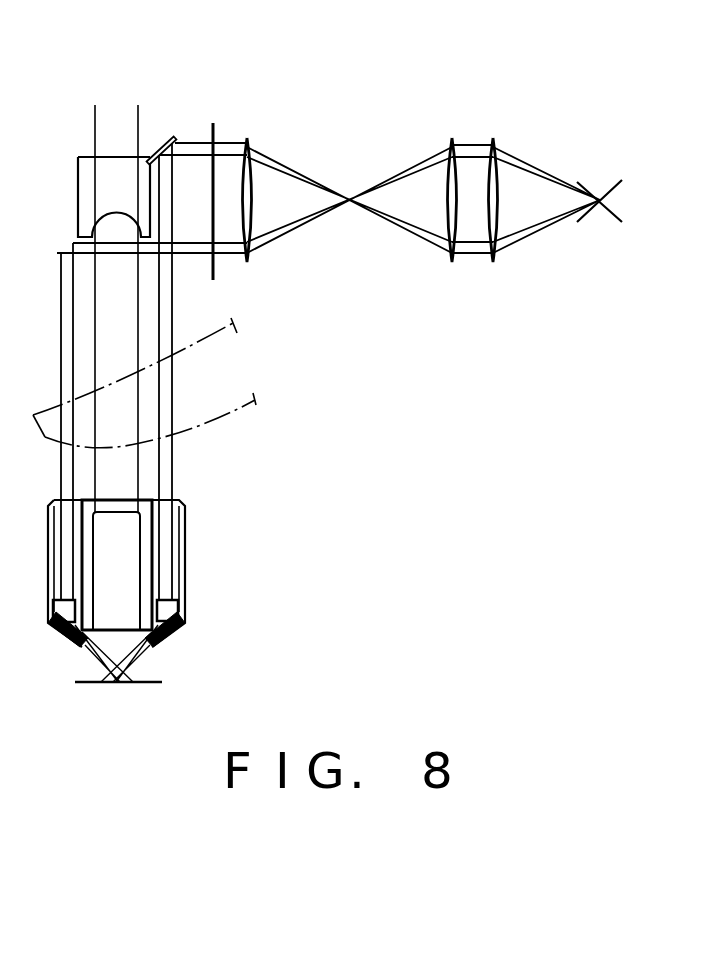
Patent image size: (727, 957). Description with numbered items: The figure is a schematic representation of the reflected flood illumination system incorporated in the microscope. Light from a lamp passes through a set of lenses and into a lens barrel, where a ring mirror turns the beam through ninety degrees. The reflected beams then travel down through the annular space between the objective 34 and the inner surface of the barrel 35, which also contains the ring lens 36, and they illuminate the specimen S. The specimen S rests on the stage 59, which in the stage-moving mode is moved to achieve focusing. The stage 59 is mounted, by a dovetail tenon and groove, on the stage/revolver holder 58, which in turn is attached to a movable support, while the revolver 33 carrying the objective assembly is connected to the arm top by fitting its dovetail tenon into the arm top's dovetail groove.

The stage 59 is at (168, 137).
The stage/revolver holder 58 is at (515, 126).
The revolver 33 is at (232, 407).
The objective 34 is at (140, 542).
The barrel 35 is at (187, 563).
The ring lens 36 is at (167, 613).
The specimen S is at (150, 681).